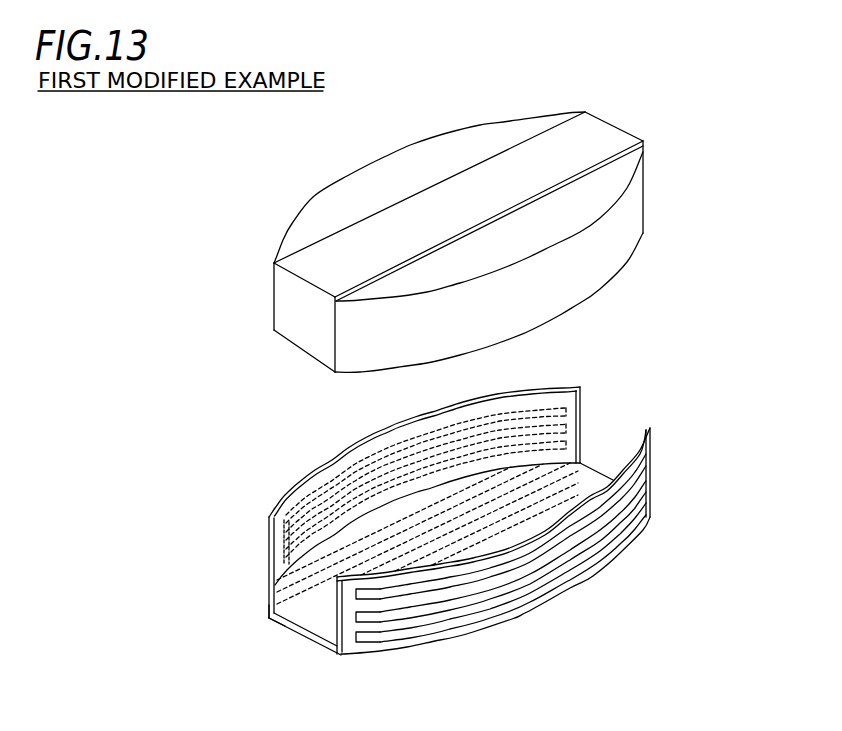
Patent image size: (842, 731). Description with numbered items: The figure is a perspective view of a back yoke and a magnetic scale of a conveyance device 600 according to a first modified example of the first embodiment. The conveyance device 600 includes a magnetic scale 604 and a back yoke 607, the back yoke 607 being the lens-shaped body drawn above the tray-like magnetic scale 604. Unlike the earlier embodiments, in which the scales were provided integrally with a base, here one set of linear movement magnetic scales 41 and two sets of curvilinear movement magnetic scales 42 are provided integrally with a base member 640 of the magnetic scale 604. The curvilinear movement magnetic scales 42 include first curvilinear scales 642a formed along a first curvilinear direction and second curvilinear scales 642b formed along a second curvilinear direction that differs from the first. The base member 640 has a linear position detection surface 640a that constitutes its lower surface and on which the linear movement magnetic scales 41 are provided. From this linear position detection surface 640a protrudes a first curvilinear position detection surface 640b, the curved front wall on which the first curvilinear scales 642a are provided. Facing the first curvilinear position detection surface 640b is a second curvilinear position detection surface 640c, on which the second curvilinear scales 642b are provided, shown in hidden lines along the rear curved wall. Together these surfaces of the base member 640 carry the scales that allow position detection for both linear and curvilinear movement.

The conveyance device 600 is at (417, 242).
The back yoke 607 is at (283, 227).
The magnetic scale 604 is at (415, 548).
The base member 640 is at (415, 533).
The linear position detection surface 640a is at (302, 635).
The first curvilinear position detection surface 640b is at (347, 633).
The second curvilinear position detection surface 640c is at (270, 553).
The first curvilinear scales 642a is at (427, 640).
The second curvilinear scales 642b is at (362, 465).
The curvilinear movement magnetic scales 42 is at (283, 526).
The linear movement magnetic scales 41 is at (272, 622).